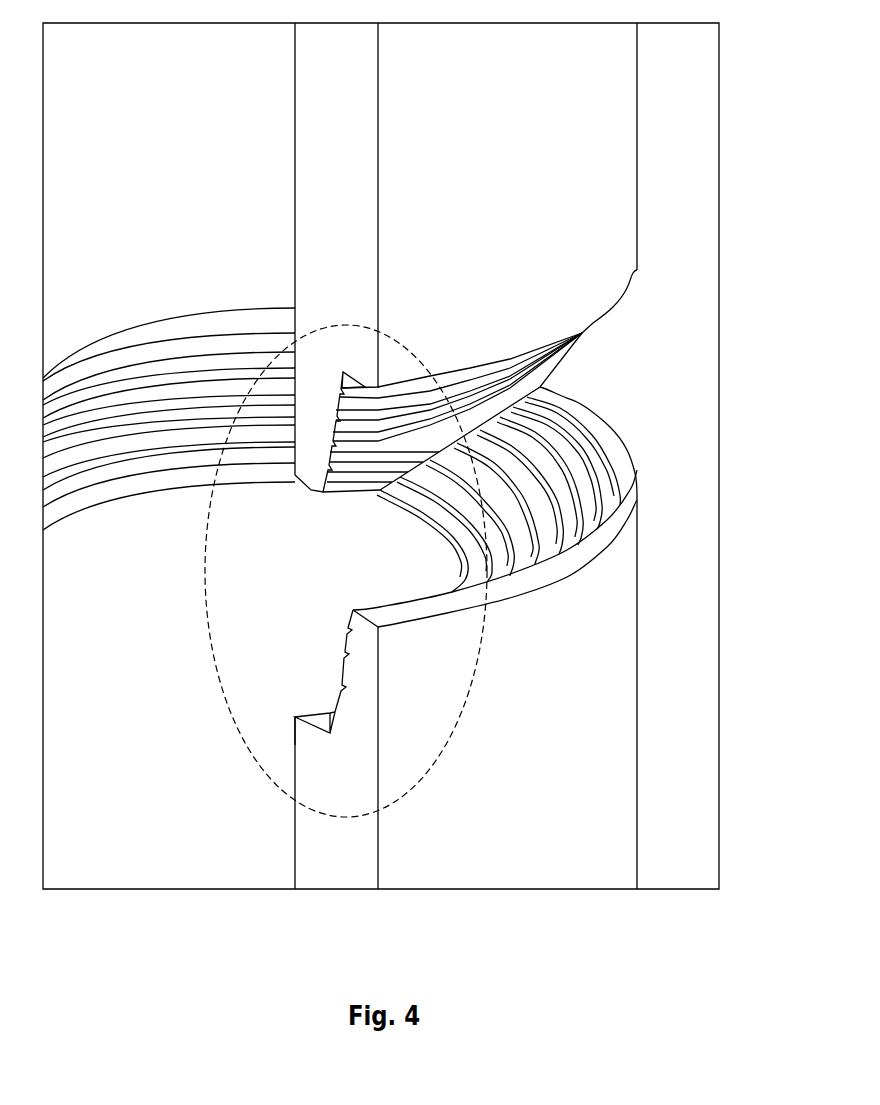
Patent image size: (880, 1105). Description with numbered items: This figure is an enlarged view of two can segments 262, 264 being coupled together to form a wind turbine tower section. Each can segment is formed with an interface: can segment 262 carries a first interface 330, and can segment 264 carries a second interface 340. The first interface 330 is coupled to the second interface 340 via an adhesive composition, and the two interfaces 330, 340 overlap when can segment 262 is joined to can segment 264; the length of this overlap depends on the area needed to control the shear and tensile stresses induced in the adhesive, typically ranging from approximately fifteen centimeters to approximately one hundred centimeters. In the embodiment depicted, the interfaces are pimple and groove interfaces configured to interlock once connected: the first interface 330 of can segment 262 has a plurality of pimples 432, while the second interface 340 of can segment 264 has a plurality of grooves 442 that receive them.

The can segment 262 is at (598, 55).
The can segment 264 is at (600, 853).
The first interface 330 is at (480, 401).
The second interface 340 is at (540, 497).
The pimples 432 is at (357, 470).
The grooves 442 is at (340, 657).